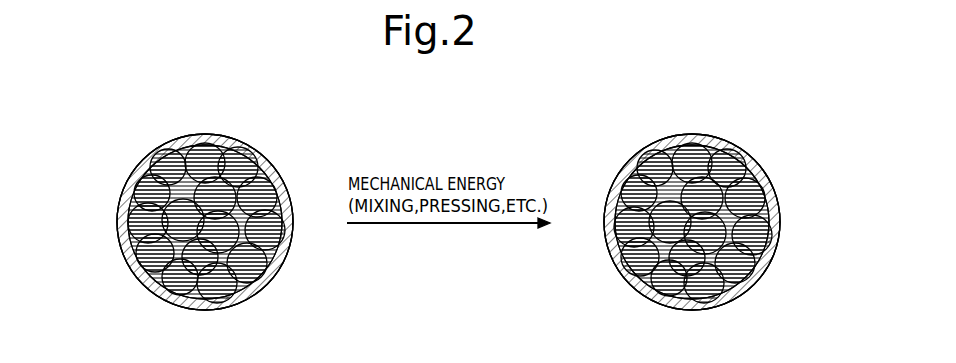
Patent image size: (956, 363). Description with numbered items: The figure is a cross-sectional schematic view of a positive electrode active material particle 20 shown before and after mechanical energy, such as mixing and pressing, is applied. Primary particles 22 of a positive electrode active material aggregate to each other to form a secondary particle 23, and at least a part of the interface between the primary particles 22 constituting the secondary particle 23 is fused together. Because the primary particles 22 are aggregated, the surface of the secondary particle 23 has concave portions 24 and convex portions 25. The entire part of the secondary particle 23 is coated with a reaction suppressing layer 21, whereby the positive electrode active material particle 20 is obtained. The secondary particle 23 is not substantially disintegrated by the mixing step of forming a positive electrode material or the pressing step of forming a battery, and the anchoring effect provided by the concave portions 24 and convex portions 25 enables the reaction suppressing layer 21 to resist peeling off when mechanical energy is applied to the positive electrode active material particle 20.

The positive electrode active material particle 20 is at (250, 121).
The reaction suppressing layer 21 is at (143, 278).
The primary particles 22 is at (182, 188).
The secondary particle 23 is at (157, 162).
The concave portions 24 is at (293, 212).
The convex portions 25 is at (278, 176).